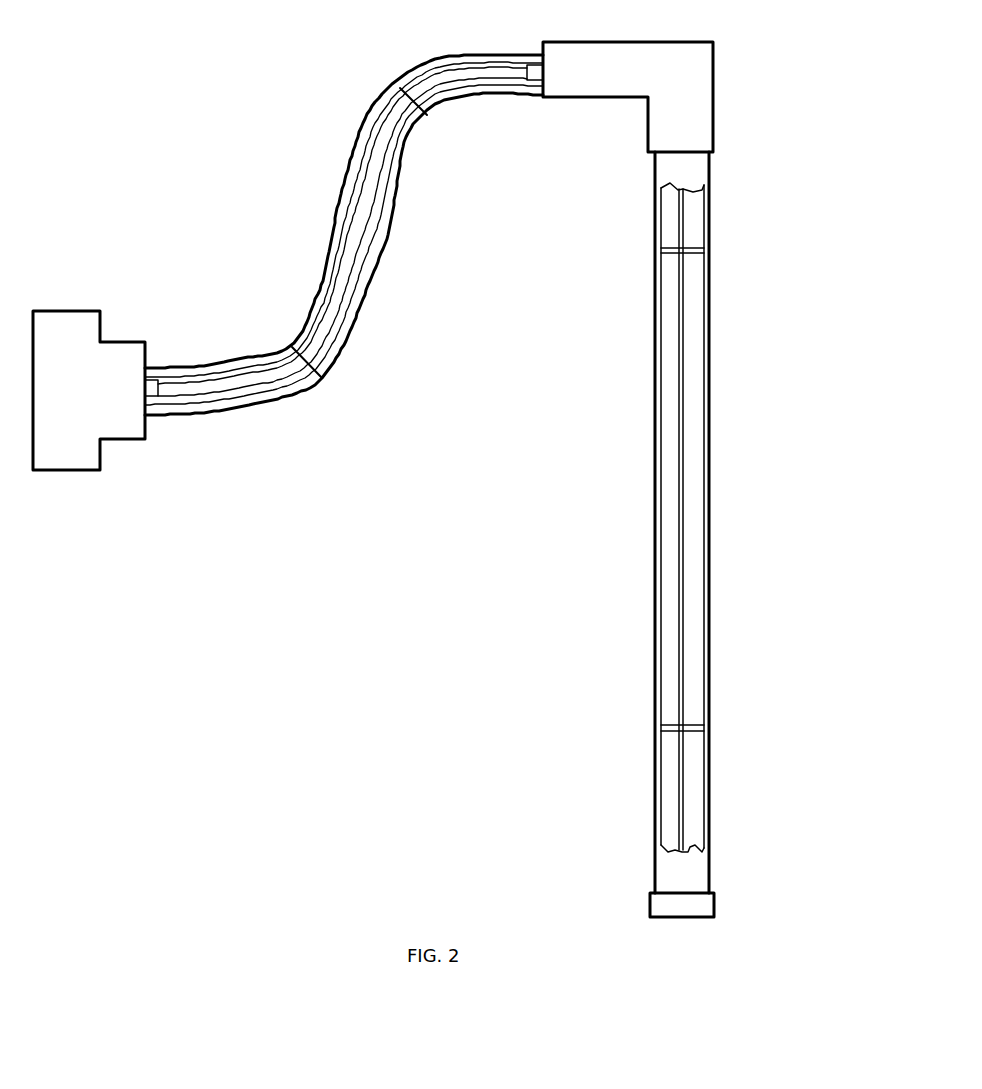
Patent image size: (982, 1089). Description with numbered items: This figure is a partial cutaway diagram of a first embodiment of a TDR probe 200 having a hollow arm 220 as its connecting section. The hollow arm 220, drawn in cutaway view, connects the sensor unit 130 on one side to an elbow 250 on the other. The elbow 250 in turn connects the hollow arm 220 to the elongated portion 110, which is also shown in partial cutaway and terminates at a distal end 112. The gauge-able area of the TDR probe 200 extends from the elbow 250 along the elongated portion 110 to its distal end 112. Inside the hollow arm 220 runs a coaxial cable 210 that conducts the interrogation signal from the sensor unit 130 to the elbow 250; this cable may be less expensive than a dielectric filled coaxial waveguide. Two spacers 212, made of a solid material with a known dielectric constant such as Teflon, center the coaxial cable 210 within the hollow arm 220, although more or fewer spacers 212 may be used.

The TDR probe 200 is at (444, 459).
The sensor unit 130 is at (85, 332).
The elbow 250 is at (698, 67).
The hollow arm 220 is at (337, 228).
The coaxial cable 210 is at (365, 215).
The spacers 212 is at (322, 378).
The elongated portion 110 is at (705, 483).
The distal end 112 is at (697, 905).